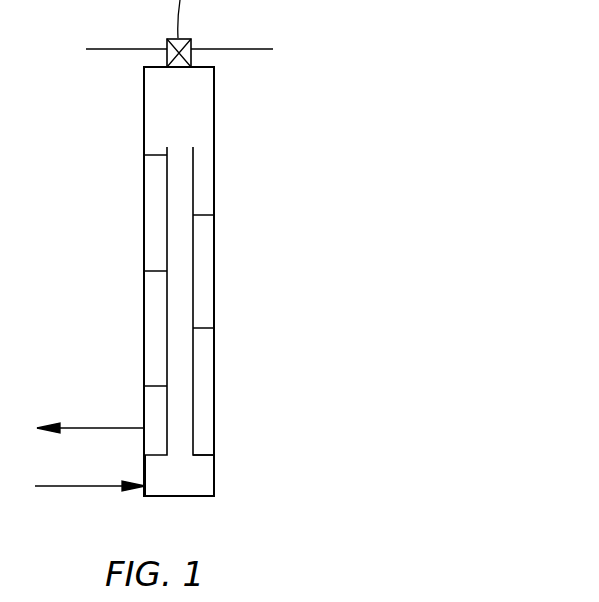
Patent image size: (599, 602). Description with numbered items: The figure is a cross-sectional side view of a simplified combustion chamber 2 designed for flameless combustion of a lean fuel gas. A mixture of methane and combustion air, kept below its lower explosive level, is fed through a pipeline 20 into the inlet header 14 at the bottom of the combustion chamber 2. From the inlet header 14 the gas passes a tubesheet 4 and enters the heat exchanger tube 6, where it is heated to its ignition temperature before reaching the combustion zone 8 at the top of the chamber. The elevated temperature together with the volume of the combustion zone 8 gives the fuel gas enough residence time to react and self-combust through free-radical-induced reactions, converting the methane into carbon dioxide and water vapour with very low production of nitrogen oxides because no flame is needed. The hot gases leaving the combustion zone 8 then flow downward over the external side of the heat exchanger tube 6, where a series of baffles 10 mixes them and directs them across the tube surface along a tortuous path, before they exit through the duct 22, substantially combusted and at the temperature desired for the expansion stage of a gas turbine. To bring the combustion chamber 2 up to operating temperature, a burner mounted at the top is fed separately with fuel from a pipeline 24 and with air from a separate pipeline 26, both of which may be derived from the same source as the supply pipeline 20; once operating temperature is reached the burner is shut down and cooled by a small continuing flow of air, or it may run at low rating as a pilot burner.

The combustion chamber 2 is at (217, 118).
The tubesheet 4 is at (200, 456).
The heat exchanger tube 6 is at (195, 405).
The combustion zone 8 is at (171, 99).
The baffles 10 is at (157, 155).
The inlet header 14 is at (177, 480).
The pipeline 20 is at (63, 488).
The duct 22 is at (88, 430).
The pipeline 24 is at (130, 48).
The pipeline 26 is at (233, 48).